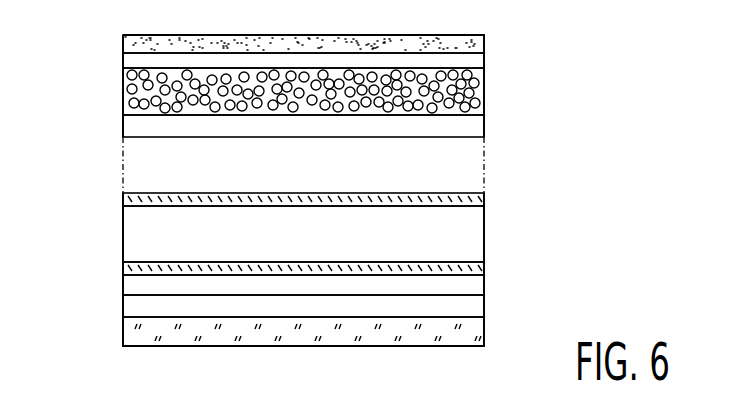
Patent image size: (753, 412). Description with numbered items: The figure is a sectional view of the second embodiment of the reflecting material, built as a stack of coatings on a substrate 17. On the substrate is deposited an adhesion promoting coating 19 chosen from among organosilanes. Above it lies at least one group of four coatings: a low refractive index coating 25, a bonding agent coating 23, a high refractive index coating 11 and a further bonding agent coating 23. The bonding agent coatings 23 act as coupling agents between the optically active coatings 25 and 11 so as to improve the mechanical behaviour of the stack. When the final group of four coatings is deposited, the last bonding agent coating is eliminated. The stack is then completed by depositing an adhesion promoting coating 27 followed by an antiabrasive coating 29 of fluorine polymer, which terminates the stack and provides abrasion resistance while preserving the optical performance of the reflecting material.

The high refractive index coating 11 is at (484, 94).
The substrate 17 is at (128, 334).
The adhesion promoting coating 19 is at (475, 308).
The bonding agent coating 23 is at (483, 200).
The low refractive index coating 25 is at (128, 126).
The adhesion promoting coating 27 is at (128, 61).
The antiabrasive coating 29 is at (473, 44).